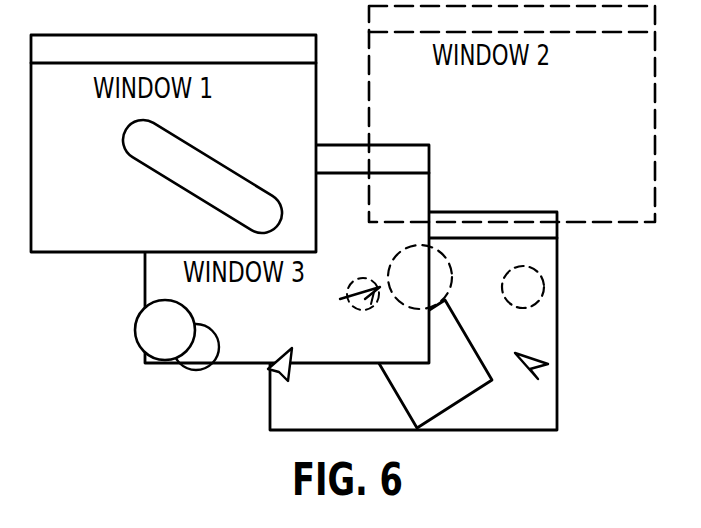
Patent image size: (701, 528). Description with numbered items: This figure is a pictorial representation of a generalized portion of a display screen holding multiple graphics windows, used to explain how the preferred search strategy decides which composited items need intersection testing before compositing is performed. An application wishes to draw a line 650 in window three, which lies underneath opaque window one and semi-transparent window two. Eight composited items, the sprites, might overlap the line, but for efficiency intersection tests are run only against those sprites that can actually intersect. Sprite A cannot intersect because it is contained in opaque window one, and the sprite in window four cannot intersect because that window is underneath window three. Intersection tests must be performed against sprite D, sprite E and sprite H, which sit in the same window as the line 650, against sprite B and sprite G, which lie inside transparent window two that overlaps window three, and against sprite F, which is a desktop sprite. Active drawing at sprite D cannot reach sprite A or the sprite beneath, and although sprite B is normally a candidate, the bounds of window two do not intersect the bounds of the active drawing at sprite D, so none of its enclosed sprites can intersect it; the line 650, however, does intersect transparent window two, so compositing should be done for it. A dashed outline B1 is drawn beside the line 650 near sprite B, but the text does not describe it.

The cursor pointer 650 is at (376, 295).
The rounded rectangle object in window 1 A is at (233, 219).
The dashed circle object B is at (420, 277).
The dashed object being dragged B1 is at (345, 304).
The circle object D is at (165, 330).
The arrow cursor object E is at (274, 383).
The arrow cursor object F is at (522, 378).
The dashed circle object G is at (523, 287).
The circle object H is at (196, 347).